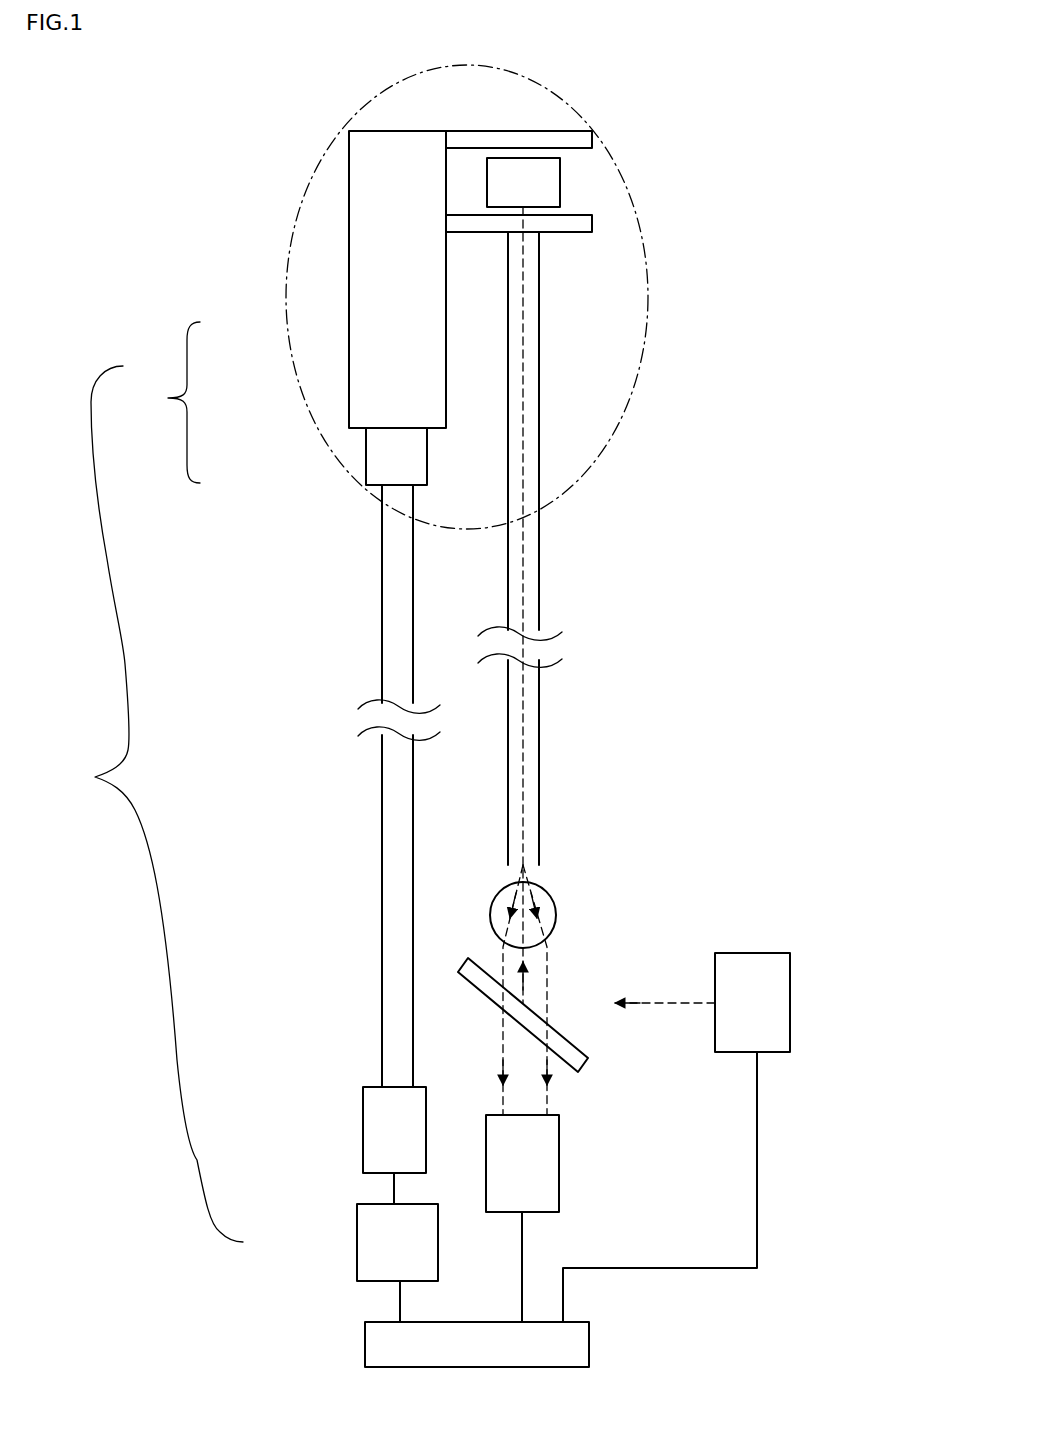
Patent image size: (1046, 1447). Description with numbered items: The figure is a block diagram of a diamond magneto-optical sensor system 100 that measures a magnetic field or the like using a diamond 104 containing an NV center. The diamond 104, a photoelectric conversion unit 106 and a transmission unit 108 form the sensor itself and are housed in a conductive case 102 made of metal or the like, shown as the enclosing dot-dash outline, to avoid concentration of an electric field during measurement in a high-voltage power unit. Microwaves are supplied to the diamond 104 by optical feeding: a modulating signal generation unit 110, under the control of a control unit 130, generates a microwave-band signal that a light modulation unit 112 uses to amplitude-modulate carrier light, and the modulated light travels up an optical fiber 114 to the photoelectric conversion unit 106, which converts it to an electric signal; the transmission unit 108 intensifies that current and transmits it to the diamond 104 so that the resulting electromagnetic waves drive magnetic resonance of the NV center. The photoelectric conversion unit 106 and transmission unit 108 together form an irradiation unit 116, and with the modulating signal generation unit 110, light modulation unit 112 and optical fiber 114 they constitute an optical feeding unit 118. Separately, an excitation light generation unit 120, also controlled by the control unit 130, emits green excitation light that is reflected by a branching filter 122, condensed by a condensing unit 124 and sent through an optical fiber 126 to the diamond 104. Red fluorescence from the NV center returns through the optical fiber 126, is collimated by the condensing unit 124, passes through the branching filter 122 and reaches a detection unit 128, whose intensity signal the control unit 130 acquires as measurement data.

The diamond magneto-optical sensor system 100 is at (834, 128).
The conductive case 102 is at (647, 334).
The diamond 104 is at (560, 183).
The photoelectric conversion unit 106 is at (366, 460).
The transmission unit 108 is at (349, 322).
The modulating signal generation unit 110 is at (357, 1236).
The light modulation unit 112 is at (363, 1127).
The optical fiber 114 is at (382, 823).
The irradiation unit 116 is at (157, 402).
The optical feeding unit 118 is at (144, 804).
The excitation light generation unit 120 is at (790, 975).
The branching filter 122 is at (481, 993).
The condensing unit 124 is at (557, 915).
The optical fiber 126 is at (539, 603).
The detection unit 128 is at (559, 1150).
The control unit 130 is at (589, 1335).